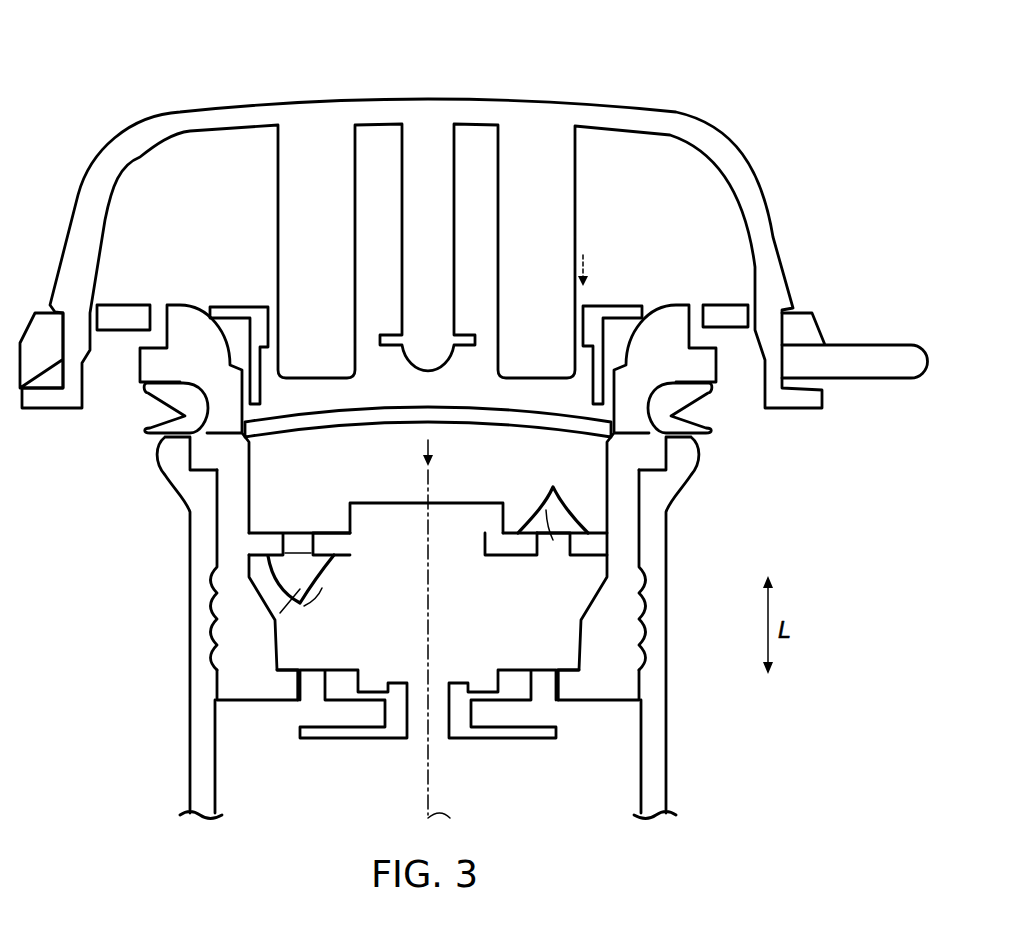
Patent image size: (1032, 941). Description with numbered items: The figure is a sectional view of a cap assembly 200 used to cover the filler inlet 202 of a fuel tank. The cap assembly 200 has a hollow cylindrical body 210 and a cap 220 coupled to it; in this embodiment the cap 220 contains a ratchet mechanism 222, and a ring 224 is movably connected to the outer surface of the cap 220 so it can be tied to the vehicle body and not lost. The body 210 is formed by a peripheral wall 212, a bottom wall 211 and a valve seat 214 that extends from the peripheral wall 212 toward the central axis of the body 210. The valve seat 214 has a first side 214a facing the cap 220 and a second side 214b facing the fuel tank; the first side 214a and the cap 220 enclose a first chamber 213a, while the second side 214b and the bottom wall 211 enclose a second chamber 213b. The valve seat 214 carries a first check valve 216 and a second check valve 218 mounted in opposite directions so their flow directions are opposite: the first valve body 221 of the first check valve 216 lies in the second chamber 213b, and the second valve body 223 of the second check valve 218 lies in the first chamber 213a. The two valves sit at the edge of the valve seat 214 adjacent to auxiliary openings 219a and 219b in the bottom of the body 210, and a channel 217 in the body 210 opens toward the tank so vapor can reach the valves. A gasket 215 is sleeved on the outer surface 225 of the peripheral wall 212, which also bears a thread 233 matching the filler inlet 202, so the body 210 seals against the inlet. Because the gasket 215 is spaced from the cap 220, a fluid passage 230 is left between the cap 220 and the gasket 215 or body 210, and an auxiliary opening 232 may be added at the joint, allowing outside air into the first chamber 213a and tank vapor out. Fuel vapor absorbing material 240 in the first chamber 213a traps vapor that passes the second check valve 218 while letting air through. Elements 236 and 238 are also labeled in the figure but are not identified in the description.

The cap assembly 200 is at (643, 48).
The filler inlet 202 is at (666, 756).
The body 210 is at (646, 657).
The bottom wall 211 is at (286, 684).
The peripheral wall 212 is at (648, 577).
The first chamber 213a is at (250, 504).
The second chamber 213b is at (268, 568).
The valve seat 214 is at (452, 534).
The first side 214a is at (384, 503).
The second side 214b is at (500, 557).
The gasket 215 is at (708, 426).
The first check valve 216 is at (302, 605).
The channel 217 is at (438, 728).
The second check valve 218 is at (555, 502).
The auxiliary opening 219a is at (316, 708).
The auxiliary opening 219b is at (562, 702).
The cap 220 is at (777, 242).
The first valve body 221 is at (322, 558).
The ratchet mechanism 222 is at (611, 308).
The second valve body 223 is at (533, 516).
The ring 224 is at (853, 345).
The outer surface 225 is at (660, 456).
The fluid passage 230 is at (91, 324).
The auxiliary opening 232 is at (144, 345).
The thread 233 is at (211, 618).
The membrane 236 is at (303, 553).
The web 238 is at (572, 548).
The fuel vapor absorbing material 240 is at (376, 416).